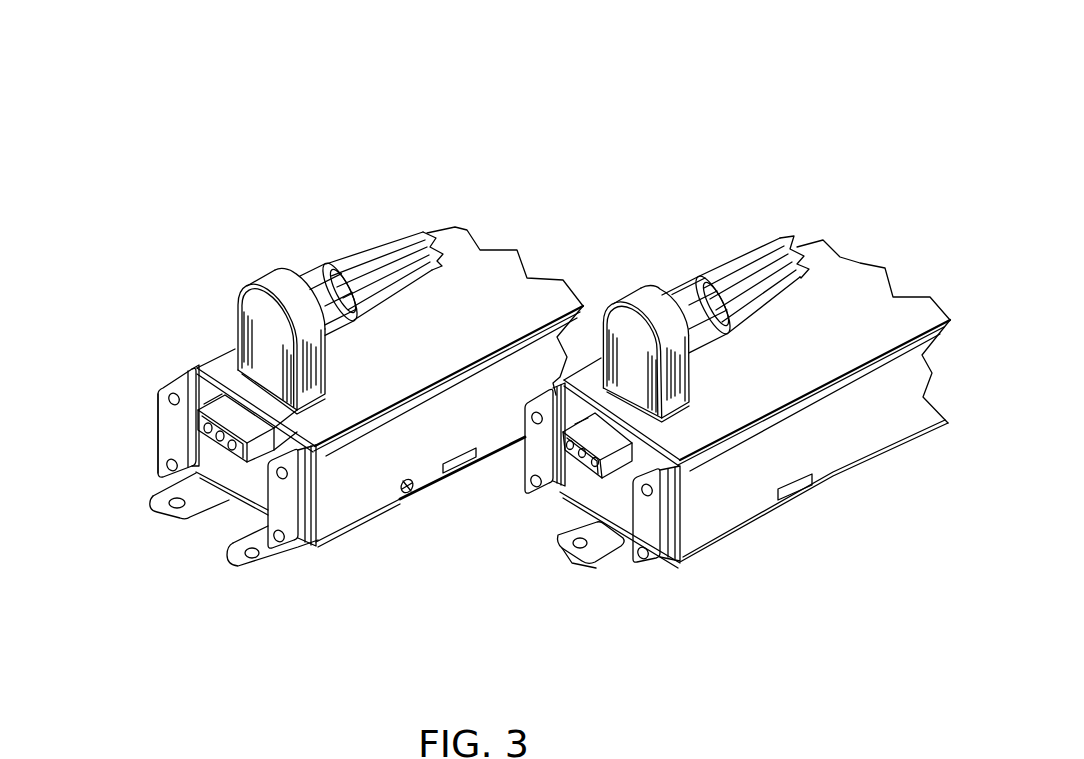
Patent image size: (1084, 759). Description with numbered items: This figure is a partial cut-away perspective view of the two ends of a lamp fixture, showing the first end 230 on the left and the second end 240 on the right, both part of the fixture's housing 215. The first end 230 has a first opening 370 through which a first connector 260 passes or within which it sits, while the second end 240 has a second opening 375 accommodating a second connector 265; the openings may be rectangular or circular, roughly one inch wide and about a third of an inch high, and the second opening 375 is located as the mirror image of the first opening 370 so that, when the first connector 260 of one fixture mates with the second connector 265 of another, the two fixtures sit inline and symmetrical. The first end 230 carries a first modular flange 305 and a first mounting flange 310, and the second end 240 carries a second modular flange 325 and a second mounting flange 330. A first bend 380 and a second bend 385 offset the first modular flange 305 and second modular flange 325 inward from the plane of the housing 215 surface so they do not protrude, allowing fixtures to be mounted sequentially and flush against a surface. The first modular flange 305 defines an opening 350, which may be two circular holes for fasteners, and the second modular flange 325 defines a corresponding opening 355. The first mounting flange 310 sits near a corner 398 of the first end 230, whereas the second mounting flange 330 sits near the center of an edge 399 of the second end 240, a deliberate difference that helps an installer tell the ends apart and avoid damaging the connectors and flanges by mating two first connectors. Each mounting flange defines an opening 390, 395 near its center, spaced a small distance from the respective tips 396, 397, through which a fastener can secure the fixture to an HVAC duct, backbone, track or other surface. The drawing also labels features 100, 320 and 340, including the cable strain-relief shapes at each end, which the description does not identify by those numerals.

The connector assembly 100 is at (328, 75).
The housing 215 is at (767, 513).
The first end 230 is at (247, 495).
The second end 240 is at (575, 483).
The first connector 260 is at (220, 406).
The second connector 265 is at (577, 437).
The first modular flange 305 is at (180, 430).
The first mounting flange 310 is at (241, 557).
The first cable strain relief 320 is at (280, 285).
The second modular flange 325 is at (710, 549).
The second mounting flange 330 is at (562, 548).
The second cable strain relief 340 is at (640, 295).
The opening 350 is at (158, 392).
The opening 355 is at (630, 560).
The first opening 370 is at (278, 440).
The second opening 375 is at (693, 440).
The first bend 380 is at (197, 363).
The second bend 385 is at (653, 563).
The opening 390 is at (265, 570).
The opening 395 is at (583, 553).
The tip 396 is at (222, 483).
The tip 397 is at (565, 556).
The corner 398 is at (310, 550).
The edge 399 is at (593, 498).